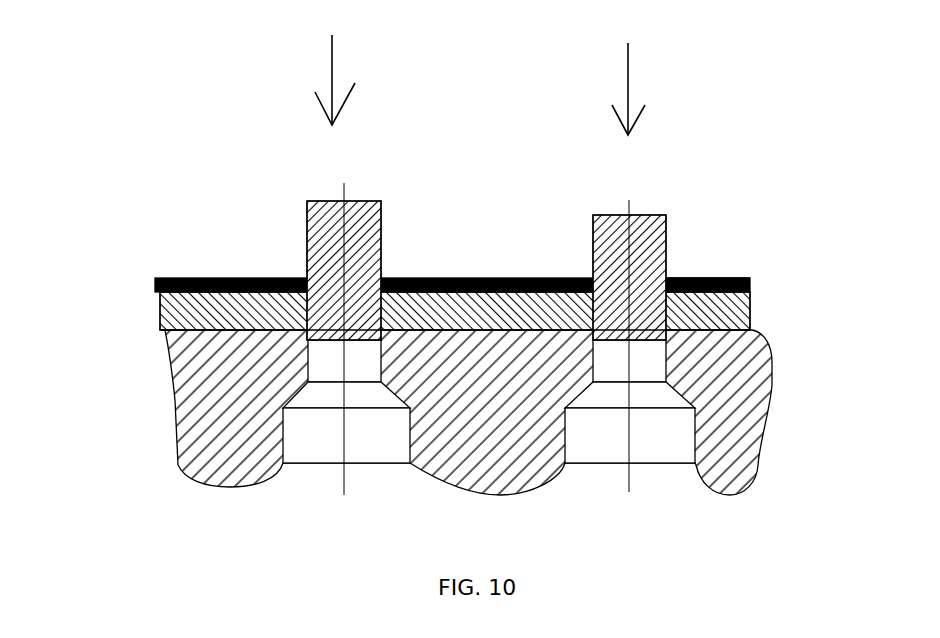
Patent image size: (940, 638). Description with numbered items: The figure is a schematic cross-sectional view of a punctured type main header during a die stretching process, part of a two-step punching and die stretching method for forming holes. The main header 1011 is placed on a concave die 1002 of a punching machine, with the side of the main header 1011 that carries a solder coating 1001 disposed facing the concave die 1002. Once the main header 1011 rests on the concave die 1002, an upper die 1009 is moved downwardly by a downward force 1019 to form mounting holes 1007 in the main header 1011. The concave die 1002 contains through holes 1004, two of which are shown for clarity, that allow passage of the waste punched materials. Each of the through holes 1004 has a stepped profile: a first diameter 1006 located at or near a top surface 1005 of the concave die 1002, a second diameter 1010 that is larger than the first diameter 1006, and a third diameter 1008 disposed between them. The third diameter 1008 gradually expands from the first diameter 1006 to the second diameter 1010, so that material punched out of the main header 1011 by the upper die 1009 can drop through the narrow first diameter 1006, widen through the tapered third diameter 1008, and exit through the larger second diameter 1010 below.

The solder coating 1001 is at (249, 284).
The concave die 1002 is at (520, 339).
The through holes 1004 is at (313, 487).
The top surface 1005 is at (708, 333).
The first diameter 1006 is at (308, 350).
The mounting holes 1007 is at (680, 277).
The third diameter 1008 is at (306, 393).
The upper die 1009 is at (606, 236).
The second diameter 1010 is at (280, 450).
The main header 1011 is at (178, 320).
The downward force 1019 is at (330, 62).